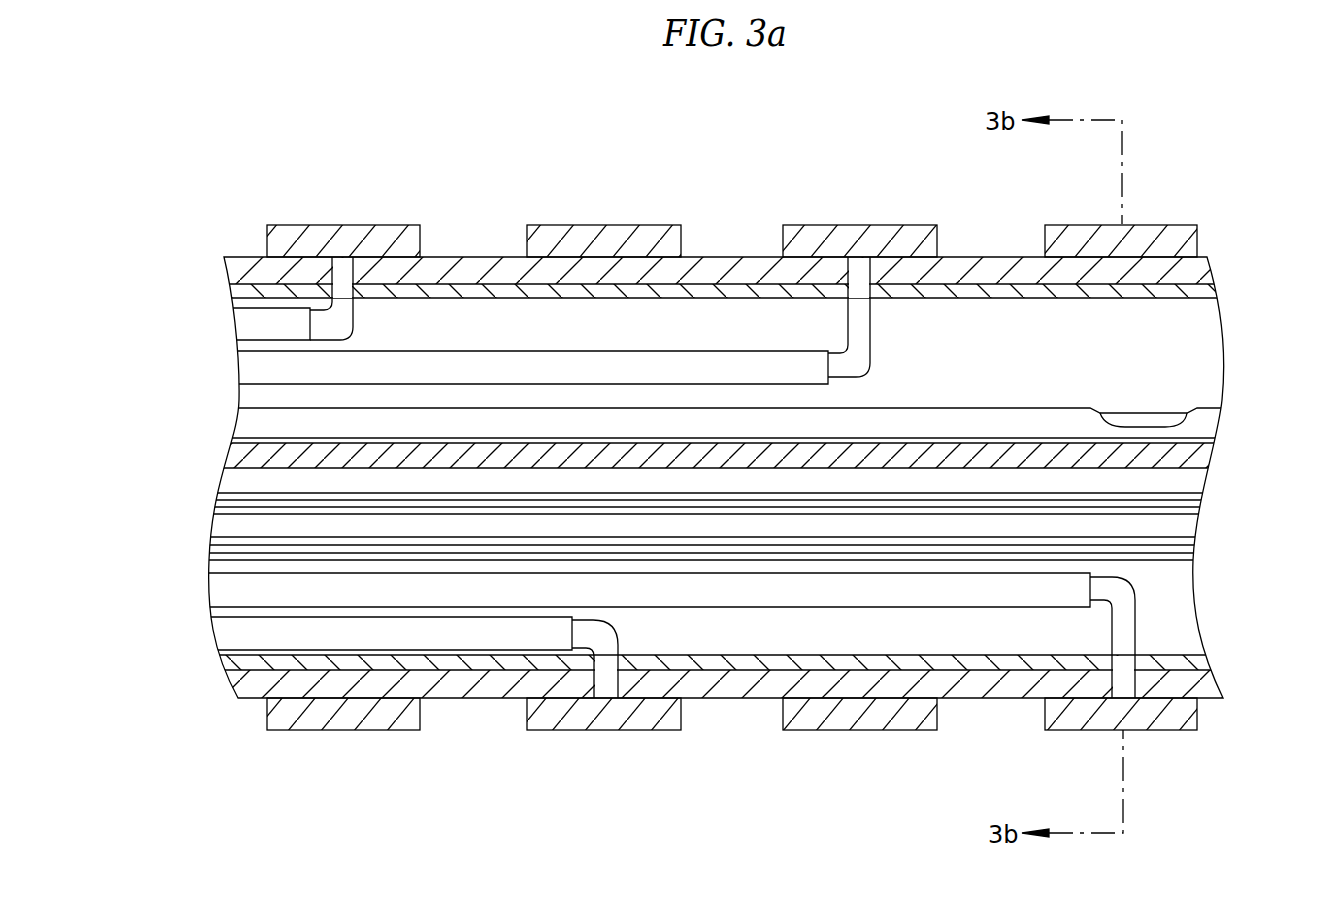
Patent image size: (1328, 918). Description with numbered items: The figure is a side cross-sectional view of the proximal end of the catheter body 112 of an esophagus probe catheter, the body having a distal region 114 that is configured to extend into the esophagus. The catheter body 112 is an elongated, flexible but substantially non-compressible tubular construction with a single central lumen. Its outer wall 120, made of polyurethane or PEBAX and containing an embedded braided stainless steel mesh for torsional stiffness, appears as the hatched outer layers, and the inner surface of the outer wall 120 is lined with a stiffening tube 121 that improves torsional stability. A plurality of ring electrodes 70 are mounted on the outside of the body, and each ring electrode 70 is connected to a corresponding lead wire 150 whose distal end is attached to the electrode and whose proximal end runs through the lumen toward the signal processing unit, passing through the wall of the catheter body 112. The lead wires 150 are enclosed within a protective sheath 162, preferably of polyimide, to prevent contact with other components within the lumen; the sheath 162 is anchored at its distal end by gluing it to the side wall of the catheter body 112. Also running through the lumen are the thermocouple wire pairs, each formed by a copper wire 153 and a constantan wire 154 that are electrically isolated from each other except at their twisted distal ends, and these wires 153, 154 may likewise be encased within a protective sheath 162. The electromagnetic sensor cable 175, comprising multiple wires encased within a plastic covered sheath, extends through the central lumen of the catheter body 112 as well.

The distal region 114 is at (580, 150).
The catheter body 112 is at (736, 255).
The outer wall 120 is at (425, 273).
The stiffening tube 121 is at (258, 292).
The lead wire 150 is at (335, 318).
The protective sheath 162 is at (262, 325).
The electromagnetic sensor cable 175 is at (262, 457).
The copper wire 153 is at (1187, 508).
The constantan wire 154 is at (1187, 493).
The ring electrode 70 is at (567, 731).